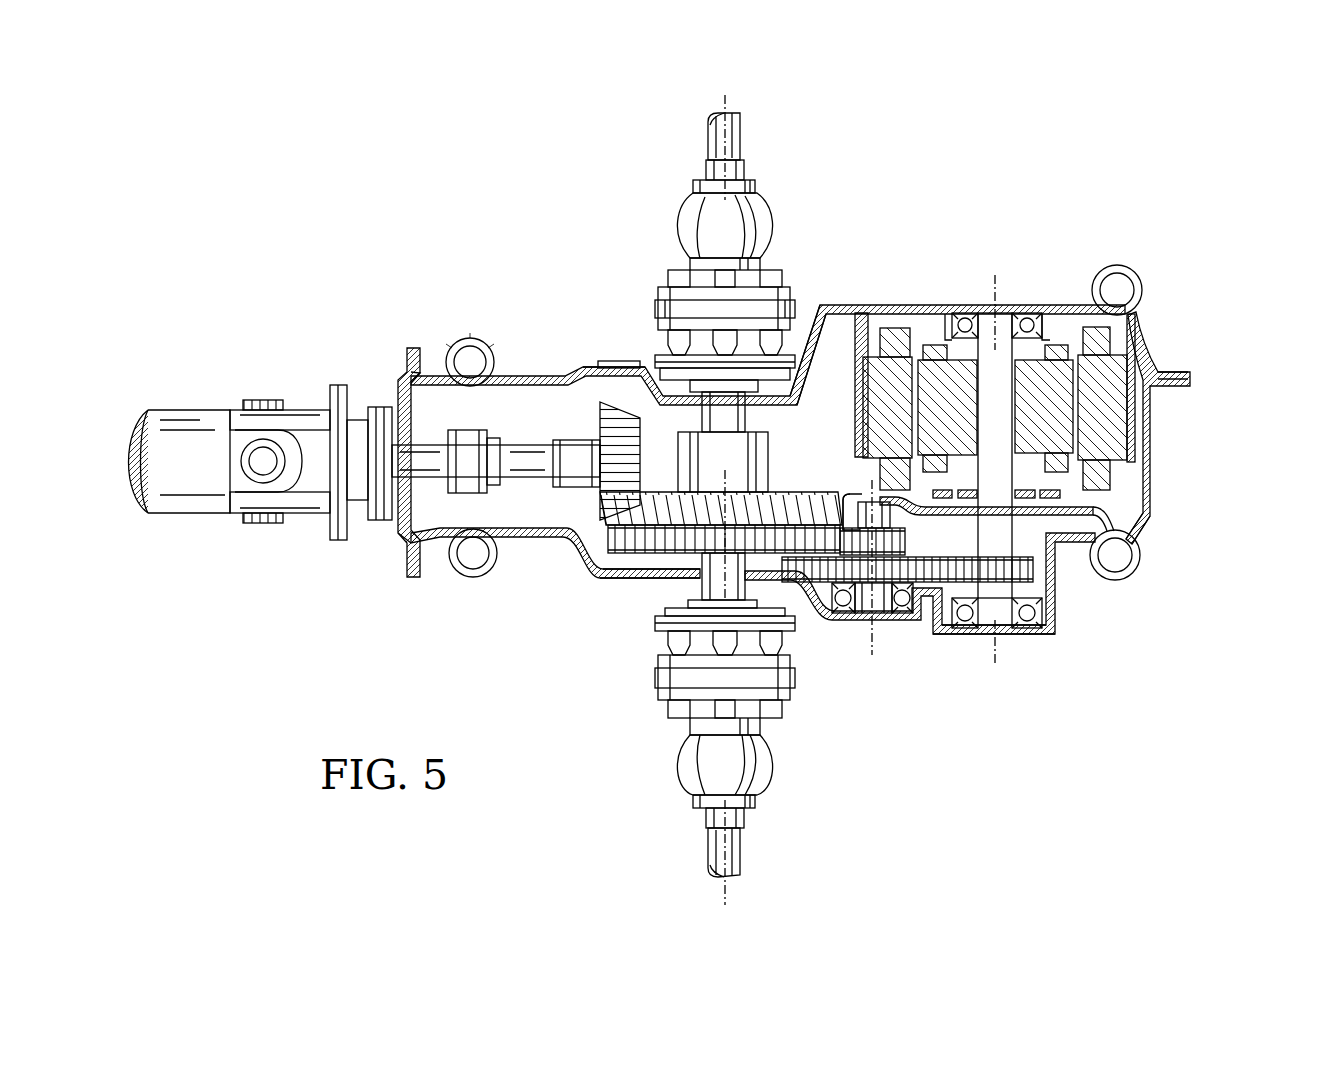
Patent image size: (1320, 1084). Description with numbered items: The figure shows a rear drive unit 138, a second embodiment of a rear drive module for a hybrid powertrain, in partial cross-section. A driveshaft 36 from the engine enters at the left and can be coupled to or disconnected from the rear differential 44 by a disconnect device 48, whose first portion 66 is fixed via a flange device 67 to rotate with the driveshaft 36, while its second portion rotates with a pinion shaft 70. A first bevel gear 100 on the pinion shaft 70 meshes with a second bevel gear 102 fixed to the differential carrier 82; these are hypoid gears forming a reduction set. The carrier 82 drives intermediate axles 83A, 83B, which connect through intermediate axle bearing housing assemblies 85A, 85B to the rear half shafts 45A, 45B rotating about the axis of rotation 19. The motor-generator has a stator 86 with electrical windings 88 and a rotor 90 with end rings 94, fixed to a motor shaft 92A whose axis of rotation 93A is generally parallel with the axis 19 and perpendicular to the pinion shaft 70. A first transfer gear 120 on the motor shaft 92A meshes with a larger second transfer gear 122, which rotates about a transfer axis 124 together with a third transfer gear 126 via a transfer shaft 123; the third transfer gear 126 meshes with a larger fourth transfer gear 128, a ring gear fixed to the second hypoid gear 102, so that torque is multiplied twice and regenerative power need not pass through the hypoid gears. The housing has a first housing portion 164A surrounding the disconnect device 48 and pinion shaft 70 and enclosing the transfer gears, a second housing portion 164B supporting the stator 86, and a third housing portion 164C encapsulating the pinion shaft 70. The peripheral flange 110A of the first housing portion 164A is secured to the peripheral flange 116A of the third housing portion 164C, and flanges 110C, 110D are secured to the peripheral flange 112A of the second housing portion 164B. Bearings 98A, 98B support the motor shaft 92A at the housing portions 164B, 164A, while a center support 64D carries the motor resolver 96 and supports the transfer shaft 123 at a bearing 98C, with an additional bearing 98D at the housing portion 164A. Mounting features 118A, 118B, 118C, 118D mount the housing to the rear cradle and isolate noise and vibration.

The axis of rotation 19 is at (722, 100).
The driveshaft 36 is at (281, 539).
The rear differential 44 is at (799, 448).
The rear half shaft 45A is at (745, 182).
The rear half shaft 45B is at (705, 820).
The disconnect device 48 is at (470, 493).
The center support 64D is at (1140, 518).
The first portion 66 is at (428, 445).
The flange device 67 is at (378, 522).
The pinion shaft 70 is at (520, 440).
The differential carrier 82 is at (675, 470).
The intermediate axle 83A is at (782, 332).
The intermediate axle 83B is at (718, 560).
The intermediate axle bearing housing assembly 85A is at (778, 283).
The intermediate axle bearing housing assembly 85B is at (668, 703).
The stator 86 is at (905, 421).
The electrical windings 88 is at (1118, 340).
The rotor 90 is at (963, 421).
The motor shaft 92A is at (1033, 568).
The axis of rotation 93A is at (1000, 292).
The end rings 94 is at (1058, 345).
The motor resolver 96 is at (1090, 505).
The bearing 98A is at (963, 312).
The bearing 98B is at (970, 630).
The bearing 98C is at (850, 497).
The bearing 98D is at (835, 613).
The first bevel gear 100 is at (598, 440).
The second bevel gear 102 is at (718, 490).
The peripheral flange 110A is at (416, 350).
The flange 110C is at (608, 368).
The flange 110D is at (1175, 386).
The peripheral flange 112A is at (607, 361).
The peripheral flange 116A is at (402, 410).
The mounting feature 118A is at (470, 338).
The mounting feature 118B is at (476, 578).
The mounting feature 118C is at (1140, 275).
The mounting feature 118D is at (1130, 578).
The first transfer gear 120 is at (1055, 628).
The second transfer gear 122 is at (935, 620).
The transfer shaft 123 is at (876, 614).
The transfer axis 124 is at (872, 645).
The third transfer gear 126 is at (918, 551).
The fourth transfer gear 128 is at (625, 577).
The rear drive unit 138 is at (1000, 177).
The first housing portion 164A is at (500, 376).
The second housing portion 164B is at (888, 310).
The third housing portion 164C is at (400, 542).